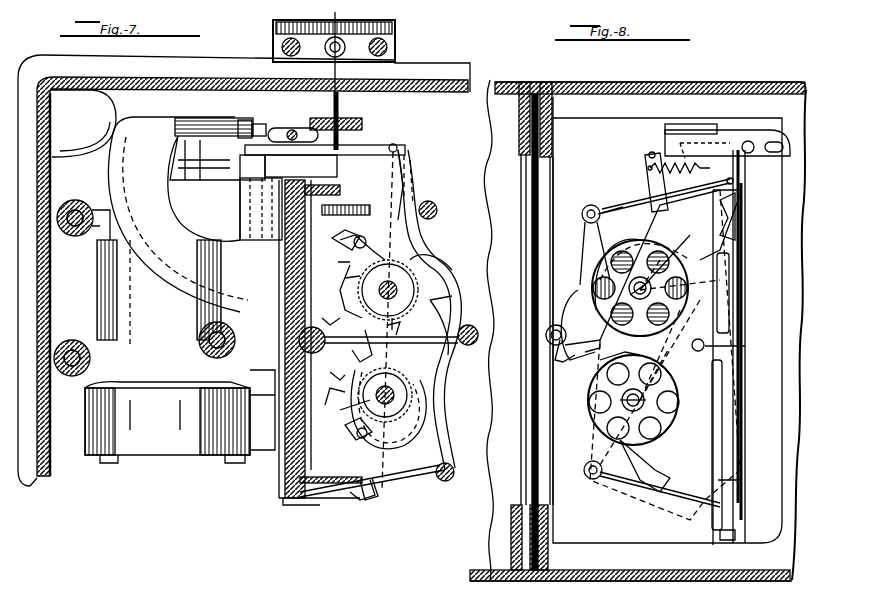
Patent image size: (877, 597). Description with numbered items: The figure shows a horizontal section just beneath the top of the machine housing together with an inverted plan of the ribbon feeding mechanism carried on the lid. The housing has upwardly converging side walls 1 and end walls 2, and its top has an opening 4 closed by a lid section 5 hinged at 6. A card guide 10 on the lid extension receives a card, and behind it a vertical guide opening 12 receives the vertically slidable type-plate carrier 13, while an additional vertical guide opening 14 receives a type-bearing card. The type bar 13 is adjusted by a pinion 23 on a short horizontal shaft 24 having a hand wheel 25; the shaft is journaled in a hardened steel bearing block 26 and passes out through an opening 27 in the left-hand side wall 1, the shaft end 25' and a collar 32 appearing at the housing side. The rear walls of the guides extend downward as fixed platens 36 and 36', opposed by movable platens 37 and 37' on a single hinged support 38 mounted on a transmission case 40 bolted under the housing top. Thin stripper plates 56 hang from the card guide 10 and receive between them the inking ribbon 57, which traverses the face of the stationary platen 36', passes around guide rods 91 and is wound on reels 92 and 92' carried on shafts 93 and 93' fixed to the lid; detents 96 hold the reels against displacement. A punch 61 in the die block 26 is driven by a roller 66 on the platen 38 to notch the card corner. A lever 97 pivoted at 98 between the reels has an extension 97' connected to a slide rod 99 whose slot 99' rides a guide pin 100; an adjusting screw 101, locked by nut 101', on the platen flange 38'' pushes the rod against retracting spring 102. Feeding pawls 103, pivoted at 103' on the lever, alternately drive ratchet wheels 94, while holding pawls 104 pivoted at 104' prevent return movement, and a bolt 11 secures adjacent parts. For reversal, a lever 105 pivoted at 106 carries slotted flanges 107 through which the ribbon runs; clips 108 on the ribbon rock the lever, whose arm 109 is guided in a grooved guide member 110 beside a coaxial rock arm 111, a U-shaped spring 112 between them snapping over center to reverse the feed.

In FIG. 7, the side walls 1 is at (448, 78).
In FIG. 8, the side walls 1 is at (603, 82).
In FIG. 7, the end walls 2 is at (45, 440).
In FIG. 7, the opening 4 is at (80, 256).
In FIG. 7, the lid section 5 is at (80, 298).
In FIG. 8, the lid section 5 is at (585, 148).
In FIG. 7, the hinge 6 is at (350, 15).
In FIG. 8, the hinge 6 is at (530, 440).
In FIG. 7, the card guide 10 is at (393, 145).
In FIG. 7, the bolt 11 is at (300, 337).
In FIG. 7, the vertical guide opening 12 is at (318, 222).
In FIG. 8, the vertical guide opening 12 is at (735, 185).
In FIG. 7, the type-plate carrier 13 is at (265, 210).
In FIG. 8, the type-plate carrier 13 is at (730, 208).
In FIG. 7, the vertical guide opening 14 is at (315, 455).
In FIG. 7, the pinion 23 is at (370, 210).
In FIG. 7, the horizontal shaft 24 is at (332, 100).
In FIG. 7, the hand wheel 25 is at (355, 40).
In FIG. 7, the bearing 25' is at (336, 48).
In FIG. 7, the bearing block 26 is at (325, 164).
In FIG. 7, the opening 27 is at (322, 48).
In FIG. 7, the collar 32 is at (358, 118).
In FIG. 8, the fixed platen 36 is at (741, 367).
In FIG. 7, the fixed platen 36' is at (327, 316).
In FIG. 8, the fixed platen 36' is at (742, 445).
In FIG. 7, the movable platen 37 is at (214, 290).
In FIG. 7, the movable platen 37' is at (235, 291).
In FIG. 7, the platen support 38 is at (178, 214).
In FIG. 7, the forwardly projecting flange 38'' is at (99, 165).
In FIG. 7, the transmission case 40 is at (175, 320).
In FIG. 7, the stripper plates 56 is at (283, 460).
In FIG. 8, the stripper plates 56 is at (748, 452).
In FIG. 7, the inking ribbon 57 is at (282, 478).
In FIG. 8, the inking ribbon 57 is at (612, 204).
In FIG. 7, the punch 61 is at (190, 152).
In FIG. 7, the roller 66 is at (180, 168).
In FIG. 7, the guide rods 91 is at (438, 210).
In FIG. 8, the guide rods 91 is at (590, 205).
In FIG. 7, the reel 92 is at (433, 310).
In FIG. 8, the reel 92 is at (602, 274).
In FIG. 7, the reel 92' is at (410, 409).
In FIG. 8, the reel 92' is at (622, 400).
In FIG. 7, the shaft 93 is at (401, 290).
In FIG. 8, the shaft 93 is at (633, 328).
In FIG. 7, the shaft 93' is at (414, 395).
In FIG. 7, the ratchet wheels 94 is at (370, 276).
In FIG. 8, the detents 96 is at (680, 255).
In FIG. 7, the lever 97 is at (439, 265).
In FIG. 8, the lever 97 is at (587, 253).
In FIG. 7, the extension 97' is at (424, 185).
In FIG. 8, the extension 97' is at (636, 182).
In FIG. 7, the pivot 98 is at (400, 320).
In FIG. 7, the slide rod 99 is at (325, 137).
In FIG. 8, the slide rod 99 is at (727, 144).
In FIG. 7, the slot 99' is at (288, 123).
In FIG. 8, the slot 99' is at (781, 126).
In FIG. 7, the guide pin 100 is at (290, 128).
In FIG. 8, the guide pin 100 is at (750, 141).
In FIG. 7, the adjusting screw 101 is at (249, 115).
In FIG. 7, the lock nut 101' is at (221, 116).
In FIG. 8, the retracting spring 102 is at (672, 168).
In FIG. 7, the feeding pawls 103 is at (342, 337).
In FIG. 7, the pivot 103' is at (354, 343).
In FIG. 7, the holding pawls 104 is at (366, 319).
In FIG. 7, the pivot 104' is at (344, 371).
In FIG. 7, the lever 105 is at (355, 500).
In FIG. 8, the lever 105 is at (708, 298).
In FIG. 7, the pivot 106 is at (326, 396).
In FIG. 8, the pivot 106 is at (734, 345).
In FIG. 7, the slotted flanges 107 is at (372, 500).
In FIG. 8, the slotted flanges 107 is at (705, 182).
In FIG. 8, the clips 108 is at (640, 483).
In FIG. 7, the arm 109 is at (440, 300).
In FIG. 8, the arm 109 is at (577, 296).
In FIG. 7, the guide member 110 is at (466, 322).
In FIG. 8, the guide member 110 is at (556, 355).
In FIG. 7, the rock arm 111 is at (455, 345).
In FIG. 8, the rock arm 111 is at (585, 358).
In FIG. 8, the U-shaped spring 112 is at (626, 352).